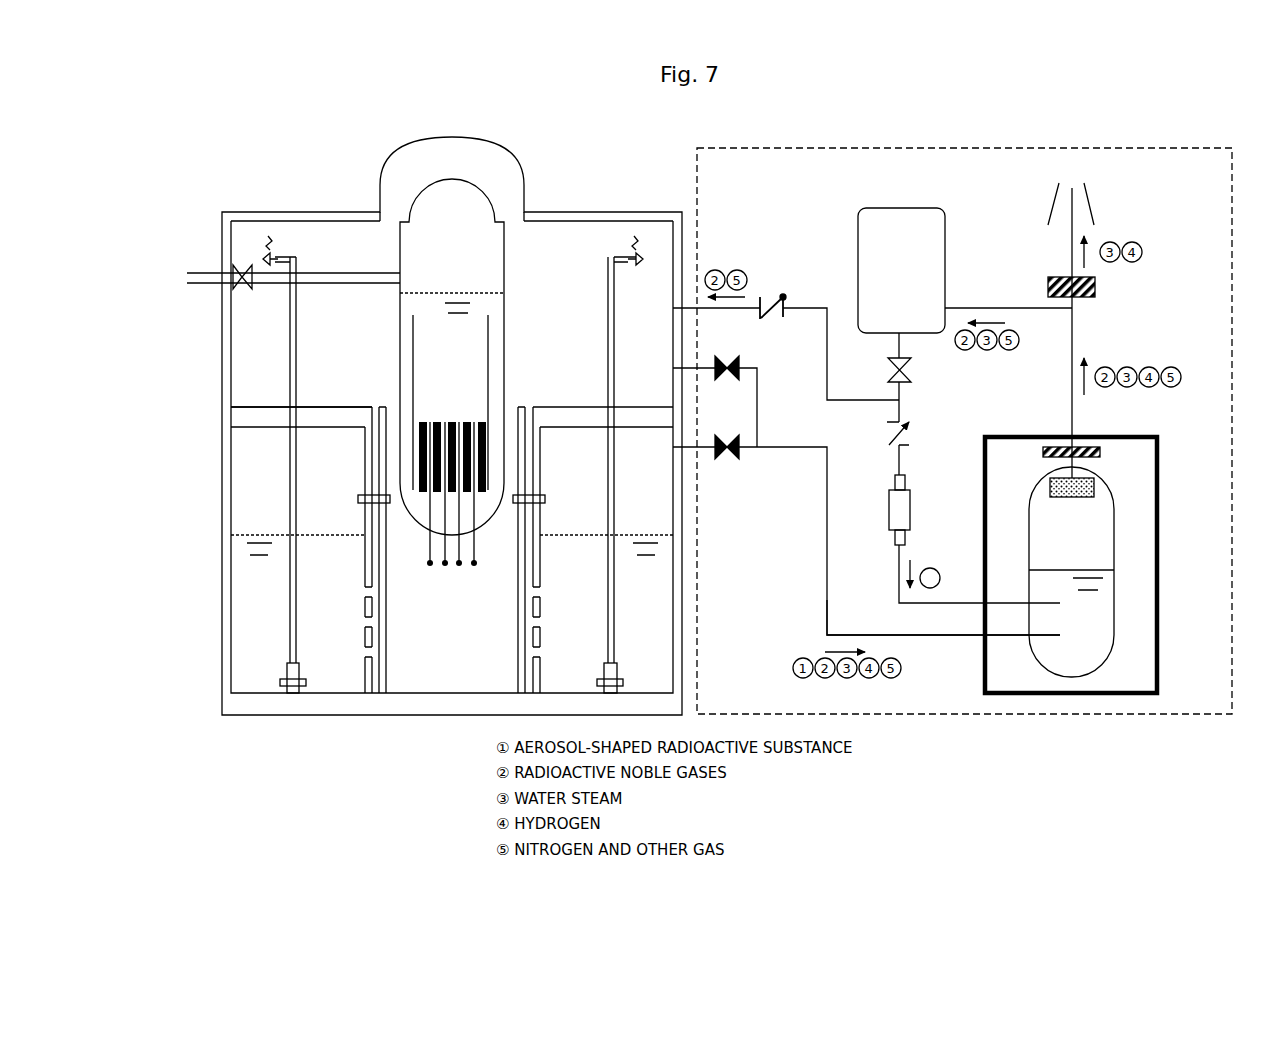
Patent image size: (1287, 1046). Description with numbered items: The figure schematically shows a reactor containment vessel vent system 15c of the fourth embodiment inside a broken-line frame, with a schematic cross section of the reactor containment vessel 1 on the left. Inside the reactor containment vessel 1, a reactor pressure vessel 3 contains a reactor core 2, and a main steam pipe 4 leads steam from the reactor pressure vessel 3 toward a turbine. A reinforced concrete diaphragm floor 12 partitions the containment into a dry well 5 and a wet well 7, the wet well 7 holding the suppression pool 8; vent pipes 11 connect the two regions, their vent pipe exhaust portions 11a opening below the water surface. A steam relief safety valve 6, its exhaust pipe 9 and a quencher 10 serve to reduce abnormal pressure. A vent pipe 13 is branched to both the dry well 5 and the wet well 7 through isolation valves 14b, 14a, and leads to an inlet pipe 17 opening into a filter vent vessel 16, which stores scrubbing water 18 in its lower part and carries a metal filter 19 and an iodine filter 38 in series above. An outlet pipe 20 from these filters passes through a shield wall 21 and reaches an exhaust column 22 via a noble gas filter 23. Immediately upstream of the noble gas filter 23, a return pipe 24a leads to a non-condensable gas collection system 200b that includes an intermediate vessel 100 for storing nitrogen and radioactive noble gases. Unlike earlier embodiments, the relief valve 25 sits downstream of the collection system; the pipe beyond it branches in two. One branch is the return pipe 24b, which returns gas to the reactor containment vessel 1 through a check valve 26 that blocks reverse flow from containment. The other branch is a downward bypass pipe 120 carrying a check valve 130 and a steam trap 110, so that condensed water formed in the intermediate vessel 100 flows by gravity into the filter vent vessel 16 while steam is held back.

The reactor containment vessel 1 is at (570, 210).
The reactor core 2 is at (482, 420).
The reactor pressure vessel 3 is at (506, 268).
The main steam pipe 4 is at (333, 277).
The dry well 5 is at (246, 338).
The steam relief safety valve 6 is at (282, 262).
The wet well 7 is at (670, 496).
The suppression pool 8 is at (662, 628).
The steam relief safety valve exhaust pipe 9 is at (288, 460).
The quencher 10 is at (286, 662).
The vent pipes 11 is at (527, 538).
The vent pipe exhaust portions 11a is at (364, 654).
The diaphragm floor 12 is at (272, 412).
The vent pipe 13 is at (827, 602).
The isolation valve 14a is at (727, 456).
The isolation valve 14b is at (716, 358).
The reactor containment vessel vent system 15c is at (930, 140).
The filter vent vessel 16 is at (1116, 606).
The inlet pipe 17 is at (1045, 636).
The scrubbing water 18 is at (1082, 655).
The metal filter 19 is at (1096, 490).
The outlet pipe 20 is at (1070, 380).
The shield wall 21 is at (1144, 436).
The exhaust column 22 is at (1094, 212).
The noble gas filter 23 is at (1098, 292).
The return pipe 24a is at (962, 306).
The return pipe 24b is at (816, 306).
The relief valve 25 is at (912, 370).
The check valve 26 is at (775, 304).
The iodine filter 38 is at (1102, 454).
The intermediate vessel 100 is at (910, 230).
The steam trap 110 is at (906, 488).
The bypass pipe 120 is at (896, 592).
The check valve 130 is at (910, 420).
The non-condensable gas collection system 200b is at (880, 207).